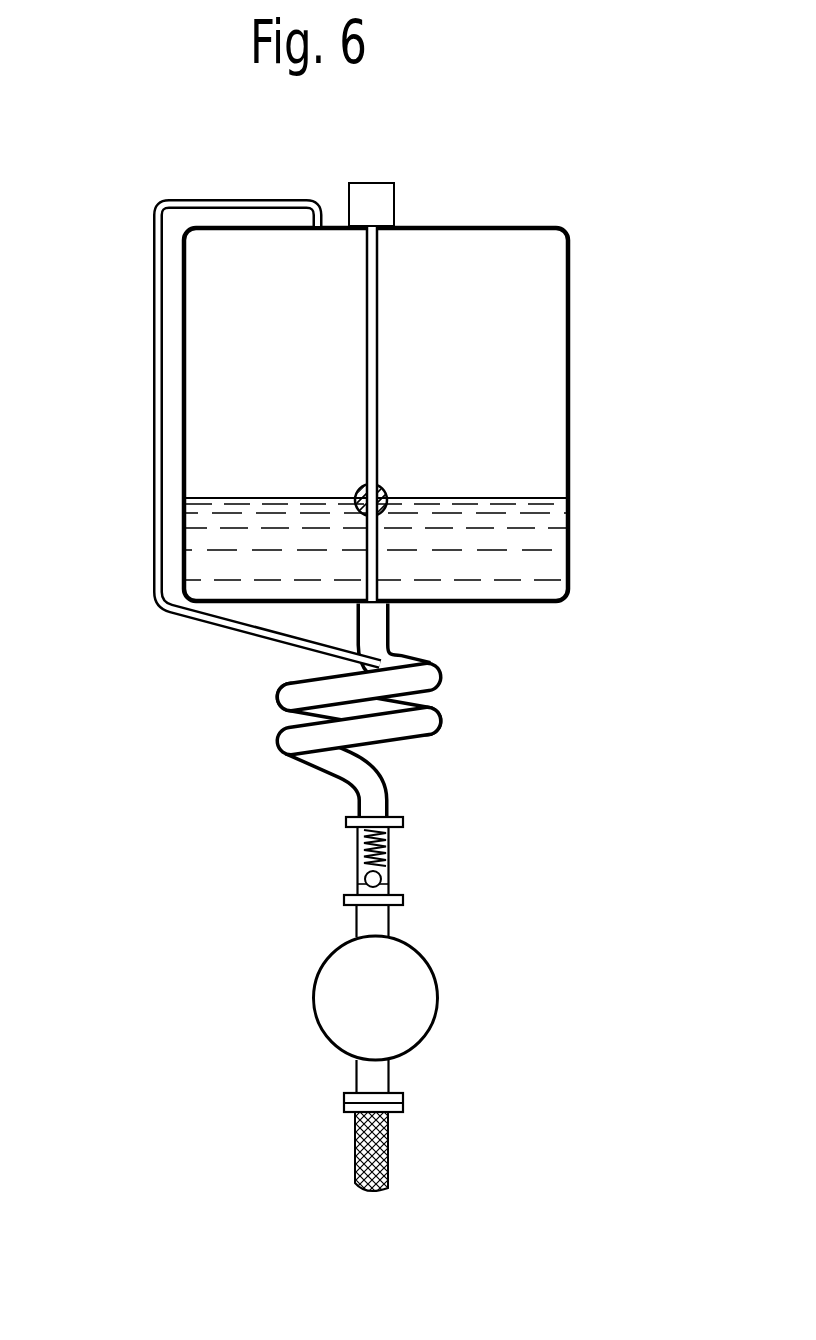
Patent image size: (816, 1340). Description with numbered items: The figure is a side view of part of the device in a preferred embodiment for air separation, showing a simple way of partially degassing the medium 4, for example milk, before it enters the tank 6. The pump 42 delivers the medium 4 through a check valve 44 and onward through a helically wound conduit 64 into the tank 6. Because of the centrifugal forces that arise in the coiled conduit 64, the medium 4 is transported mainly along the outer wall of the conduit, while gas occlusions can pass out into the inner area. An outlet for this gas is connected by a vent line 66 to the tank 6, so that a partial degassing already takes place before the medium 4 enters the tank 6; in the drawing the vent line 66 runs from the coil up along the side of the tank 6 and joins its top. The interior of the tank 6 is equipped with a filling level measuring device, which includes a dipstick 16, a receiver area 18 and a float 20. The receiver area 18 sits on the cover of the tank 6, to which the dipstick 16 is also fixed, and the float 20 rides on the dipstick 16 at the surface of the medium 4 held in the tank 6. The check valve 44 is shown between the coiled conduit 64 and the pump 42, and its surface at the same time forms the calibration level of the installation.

The medium 4 is at (545, 542).
The tank 6 is at (570, 361).
The dipstick 16 is at (372, 340).
The receiver area 18 is at (380, 196).
The float 20 is at (385, 487).
The centrifugal pump 42 is at (330, 1000).
The check valve 44 is at (378, 877).
The helically wound conduit 64 is at (426, 722).
The vent line 66 is at (152, 340).